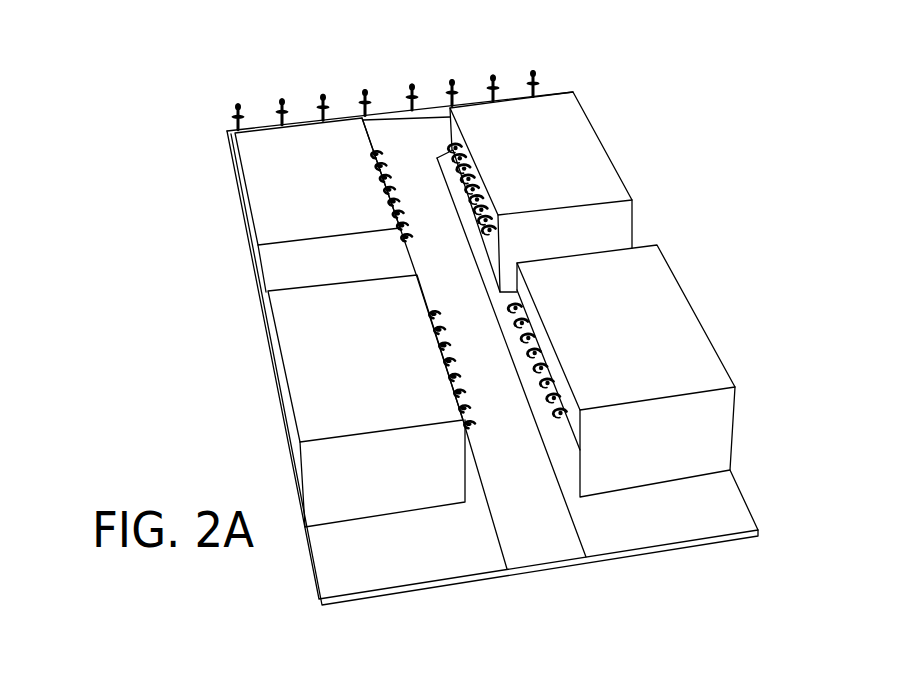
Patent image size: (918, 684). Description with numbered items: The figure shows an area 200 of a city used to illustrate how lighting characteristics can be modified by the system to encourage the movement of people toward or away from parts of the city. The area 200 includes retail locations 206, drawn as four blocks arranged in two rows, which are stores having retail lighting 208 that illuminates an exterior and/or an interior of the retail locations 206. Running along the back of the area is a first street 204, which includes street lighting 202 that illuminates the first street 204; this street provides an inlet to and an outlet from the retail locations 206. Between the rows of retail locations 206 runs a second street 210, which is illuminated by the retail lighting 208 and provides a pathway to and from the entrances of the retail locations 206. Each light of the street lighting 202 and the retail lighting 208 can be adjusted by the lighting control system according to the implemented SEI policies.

The area of a city 200 is at (140, 122).
The street lighting 202 is at (322, 106).
The first street 204 is at (403, 150).
The retail locations 206 is at (299, 190).
The retail lighting 208 is at (410, 244).
The second street 210 is at (547, 532).